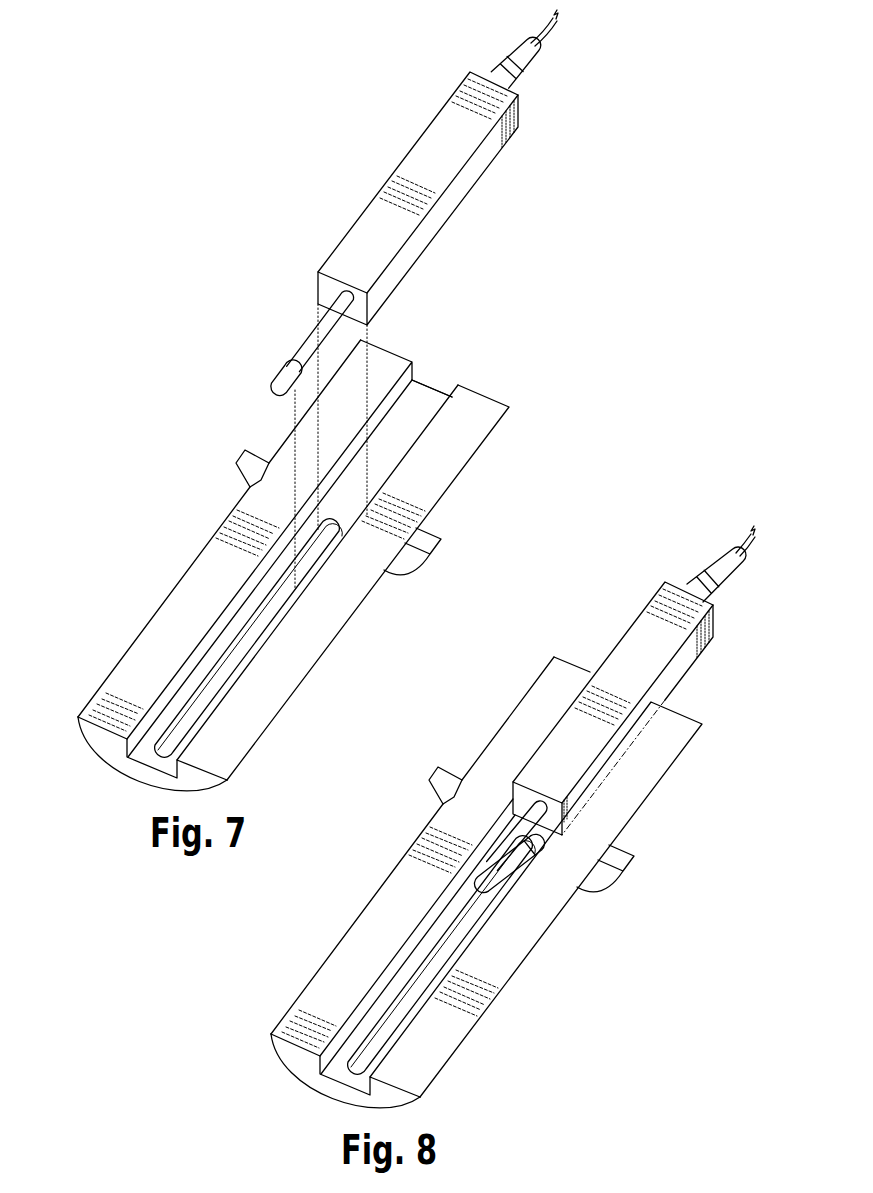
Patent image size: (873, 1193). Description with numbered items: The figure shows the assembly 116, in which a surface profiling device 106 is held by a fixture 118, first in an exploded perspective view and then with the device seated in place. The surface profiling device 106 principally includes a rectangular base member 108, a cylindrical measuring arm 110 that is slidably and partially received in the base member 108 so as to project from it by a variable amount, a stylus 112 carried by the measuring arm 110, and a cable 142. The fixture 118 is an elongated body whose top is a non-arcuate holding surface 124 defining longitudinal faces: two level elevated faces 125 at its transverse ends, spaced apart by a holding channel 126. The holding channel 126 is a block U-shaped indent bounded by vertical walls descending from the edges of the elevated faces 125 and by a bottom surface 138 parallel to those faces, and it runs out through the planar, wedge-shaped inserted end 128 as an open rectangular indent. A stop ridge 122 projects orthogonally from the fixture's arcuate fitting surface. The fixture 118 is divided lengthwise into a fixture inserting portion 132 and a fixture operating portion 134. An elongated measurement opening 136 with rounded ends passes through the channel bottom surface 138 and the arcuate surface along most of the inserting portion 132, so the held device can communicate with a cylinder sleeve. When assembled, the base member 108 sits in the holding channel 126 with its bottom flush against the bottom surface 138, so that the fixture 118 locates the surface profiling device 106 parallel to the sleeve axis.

In FIG. 7, the surface profiling device 106 is at (443, 167).
In FIG. 8, the surface profiling device 106 is at (634, 673).
In FIG. 7, the base member 108 is at (453, 190).
In FIG. 8, the base member 108 is at (637, 652).
In FIG. 7, the measuring arm 110 is at (288, 341).
In FIG. 8, the measuring arm 110 is at (516, 836).
In FIG. 7, the stylus 112 is at (287, 384).
In FIG. 8, the stylus 112 is at (483, 897).
In FIG. 7, the assembly 116 is at (157, 398).
In FIG. 8, the assembly 116 is at (672, 939).
In FIG. 7, the fixture 118 is at (96, 628).
In FIG. 8, the fixture 118 is at (292, 1005).
In FIG. 7, the stop ridge 122 is at (238, 467).
In FIG. 8, the stop ridge 122 is at (432, 802).
In FIG. 7, the non-arcuate holding surface 124 is at (319, 622).
In FIG. 7, the elevated faces 125 is at (390, 366).
In FIG. 8, the elevated faces 125 is at (362, 970).
In FIG. 7, the holding channel 126 is at (441, 358).
In FIG. 8, the holding channel 126 is at (343, 1074).
In FIG. 7, the inserted end 128 is at (105, 745).
In FIG. 8, the inserted end 128 is at (302, 1053).
In FIG. 7, the fixture inserting portion 132 is at (320, 537).
In FIG. 8, the fixture inserting portion 132 is at (490, 892).
In FIG. 7, the fixture operating portion 134 is at (500, 448).
In FIG. 8, the fixture operating portion 134 is at (685, 798).
In FIG. 7, the measurement opening 136 is at (235, 658).
In FIG. 8, the measurement opening 136 is at (440, 970).
In FIG. 7, the holding channel bottom surface 138 is at (426, 392).
In FIG. 7, the cable 142 is at (528, 65).
In FIG. 8, the cable 142 is at (709, 571).